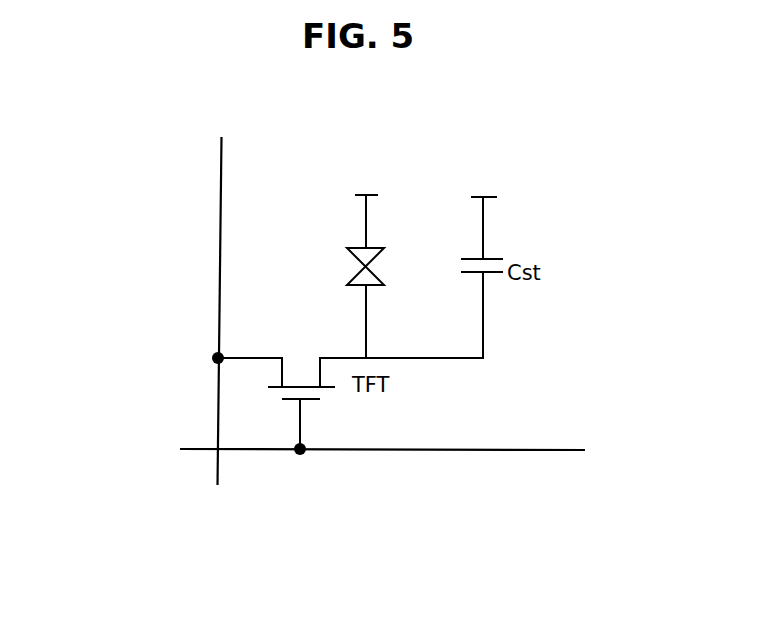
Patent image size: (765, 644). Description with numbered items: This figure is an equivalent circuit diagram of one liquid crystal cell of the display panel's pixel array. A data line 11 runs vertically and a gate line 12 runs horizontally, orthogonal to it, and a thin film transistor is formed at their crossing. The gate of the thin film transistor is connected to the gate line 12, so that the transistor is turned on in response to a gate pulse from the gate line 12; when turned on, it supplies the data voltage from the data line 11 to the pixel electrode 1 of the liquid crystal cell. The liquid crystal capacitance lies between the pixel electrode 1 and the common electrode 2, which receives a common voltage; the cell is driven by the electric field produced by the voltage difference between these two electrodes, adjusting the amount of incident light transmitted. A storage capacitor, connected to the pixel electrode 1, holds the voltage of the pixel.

The pixel electrode 1 is at (352, 261).
The common electrode 2 is at (361, 248).
The data line 11 is at (221, 206).
The gate line 12 is at (490, 451).